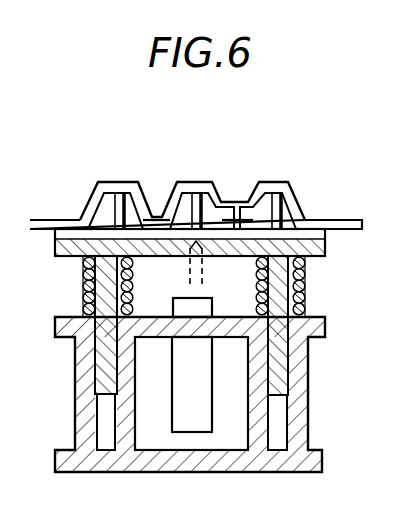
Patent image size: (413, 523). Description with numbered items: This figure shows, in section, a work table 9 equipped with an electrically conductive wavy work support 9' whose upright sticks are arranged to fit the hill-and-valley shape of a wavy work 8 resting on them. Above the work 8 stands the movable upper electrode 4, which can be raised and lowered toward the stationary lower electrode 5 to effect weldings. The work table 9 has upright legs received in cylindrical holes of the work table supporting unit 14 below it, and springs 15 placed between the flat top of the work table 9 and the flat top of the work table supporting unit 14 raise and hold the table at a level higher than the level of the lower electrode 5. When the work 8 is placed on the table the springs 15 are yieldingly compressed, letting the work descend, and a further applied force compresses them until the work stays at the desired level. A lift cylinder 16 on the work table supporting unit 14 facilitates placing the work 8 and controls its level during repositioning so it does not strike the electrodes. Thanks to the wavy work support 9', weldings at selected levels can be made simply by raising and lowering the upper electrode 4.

The upper electrode 4 is at (191, 175).
The lower electrode 5 is at (193, 264).
The work 8 is at (288, 182).
The work table 9 is at (215, 253).
The wavy work support 9' is at (196, 195).
The work table supporting unit 14 is at (307, 392).
The springs 15 is at (307, 285).
The lift cylinder 16 is at (183, 363).